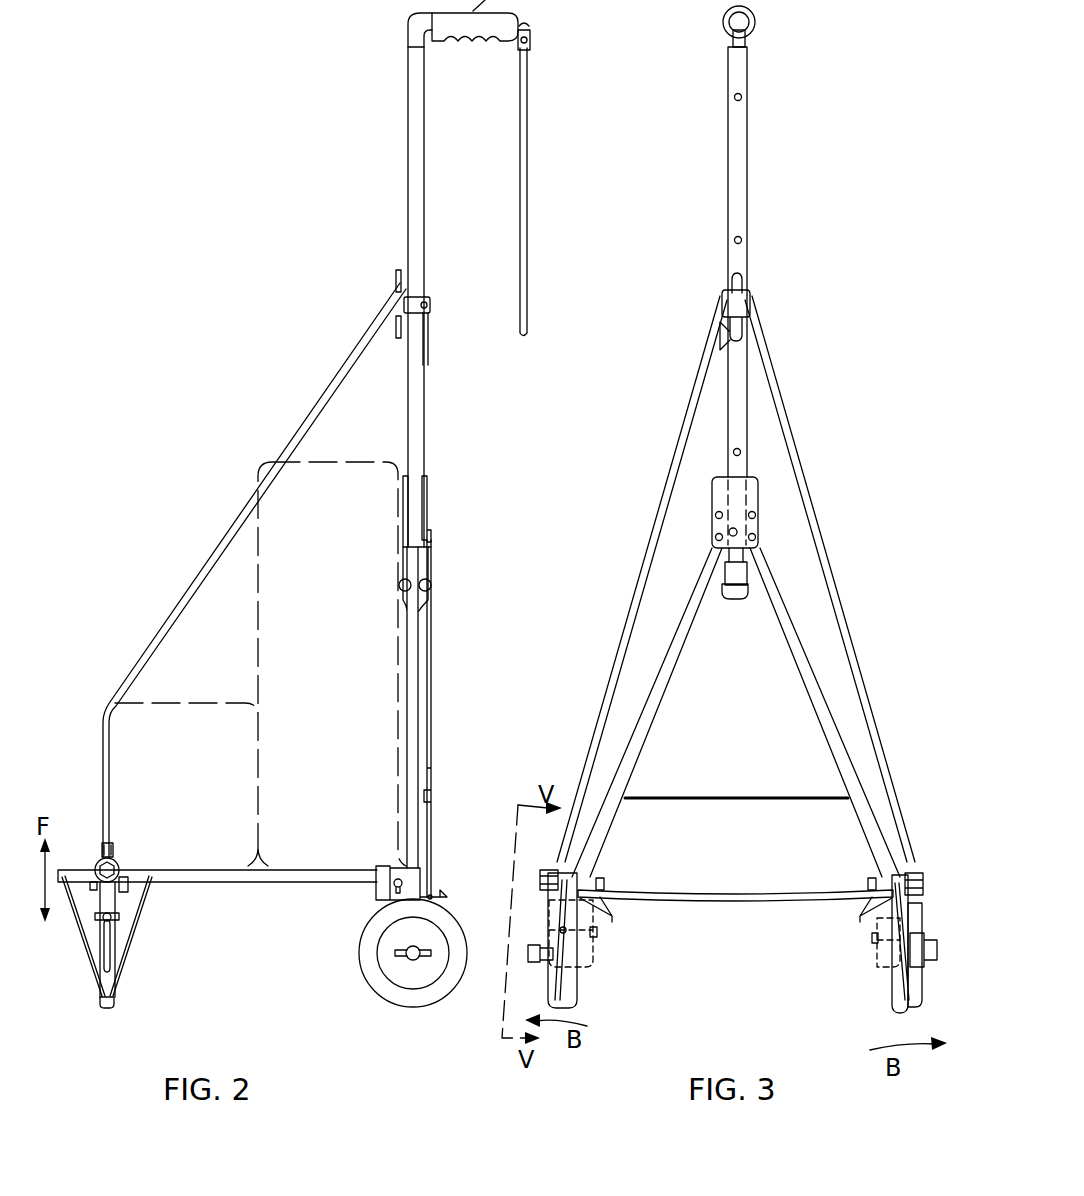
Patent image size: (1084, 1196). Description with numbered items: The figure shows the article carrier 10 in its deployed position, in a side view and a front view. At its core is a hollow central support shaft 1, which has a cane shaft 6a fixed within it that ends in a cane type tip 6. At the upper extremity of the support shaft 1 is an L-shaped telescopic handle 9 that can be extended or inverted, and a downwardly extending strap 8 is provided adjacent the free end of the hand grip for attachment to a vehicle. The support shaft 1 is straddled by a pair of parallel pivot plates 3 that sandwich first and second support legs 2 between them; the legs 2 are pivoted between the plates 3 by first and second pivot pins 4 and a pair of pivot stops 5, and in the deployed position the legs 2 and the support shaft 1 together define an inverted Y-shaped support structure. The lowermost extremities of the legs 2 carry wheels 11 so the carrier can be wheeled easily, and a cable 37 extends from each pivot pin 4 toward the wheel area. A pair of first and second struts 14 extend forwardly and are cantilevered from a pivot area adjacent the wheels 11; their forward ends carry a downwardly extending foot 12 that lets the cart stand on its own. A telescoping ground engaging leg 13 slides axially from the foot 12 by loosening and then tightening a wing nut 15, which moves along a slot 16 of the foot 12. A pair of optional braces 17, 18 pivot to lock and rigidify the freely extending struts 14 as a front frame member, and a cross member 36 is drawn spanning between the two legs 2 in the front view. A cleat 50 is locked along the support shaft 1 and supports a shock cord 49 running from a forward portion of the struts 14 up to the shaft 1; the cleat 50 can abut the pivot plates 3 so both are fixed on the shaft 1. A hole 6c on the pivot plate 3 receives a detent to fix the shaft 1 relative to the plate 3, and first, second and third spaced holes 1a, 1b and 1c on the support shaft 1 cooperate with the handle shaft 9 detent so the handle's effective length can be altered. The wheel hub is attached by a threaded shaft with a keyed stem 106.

In FIG. 2, the hollow central support shaft 1 is at (413, 149).
In FIG. 3, the hollow central support shaft 1 is at (741, 166).
In FIG. 3, the first spaced hole 1a is at (742, 97).
In FIG. 3, the second spaced hole 1b is at (742, 240).
In FIG. 3, the third spaced hole 1c is at (741, 452).
In FIG. 2, the support legs 2 is at (419, 668).
In FIG. 3, the support legs 2 is at (658, 695).
In FIG. 2, the pivot plates 3 is at (408, 502).
In FIG. 3, the pivot plates 3 is at (720, 481).
In FIG. 3, the pivot pins 4 is at (715, 517).
In FIG. 3, the pivot stops 5 is at (716, 539).
In FIG. 3, the cane type tip 6 is at (735, 597).
In FIG. 3, the cane shaft 6a is at (730, 557).
In FIG. 3, the hole 6c is at (734, 528).
In FIG. 2, the strap 8 is at (523, 160).
In FIG. 2, the telescopic handle 9 is at (411, 28).
In FIG. 2, the article carrier 10 is at (262, 340).
In FIG. 3, the article carrier 10 is at (790, 333).
In FIG. 2, the wheels 11 is at (397, 994).
In FIG. 2, the foot 12 is at (109, 983).
In FIG. 2, the telescoping ground engaging leg 13 is at (112, 1002).
In FIG. 2, the struts 14 is at (277, 876).
In FIG. 3, the struts 14 is at (592, 882).
In FIG. 2, the wing nut 15 is at (119, 917).
In FIG. 2, the slot 16 is at (111, 943).
In FIG. 3, the brace 17 is at (669, 905).
In FIG. 3, the brace 18 is at (680, 888).
In FIG. 3, the cross brace 36 is at (715, 797).
In FIG. 2, the cable 37 is at (433, 720).
In FIG. 2, the shock cord 49 is at (233, 511).
In FIG. 2, the cleat 50 is at (429, 296).
In FIG. 2, the keyed stem 106 is at (395, 953).